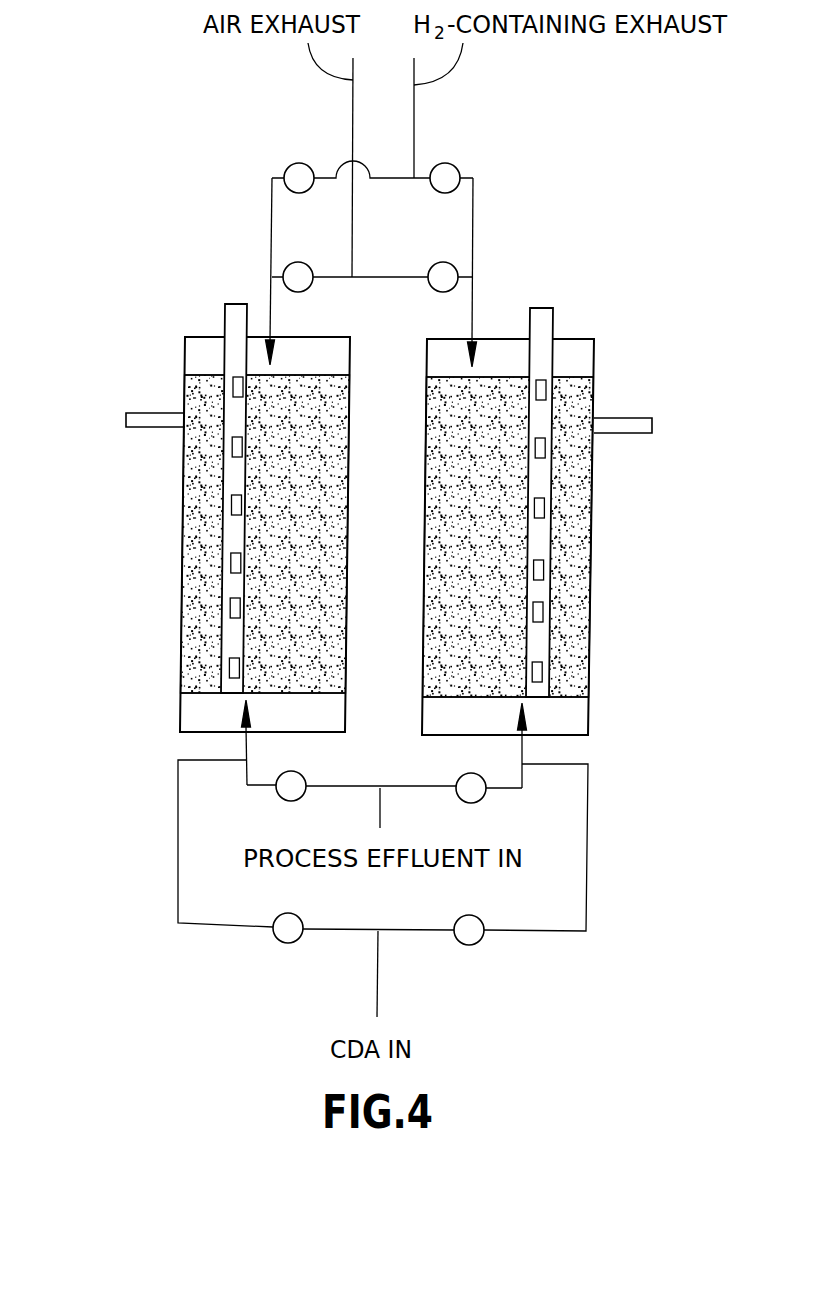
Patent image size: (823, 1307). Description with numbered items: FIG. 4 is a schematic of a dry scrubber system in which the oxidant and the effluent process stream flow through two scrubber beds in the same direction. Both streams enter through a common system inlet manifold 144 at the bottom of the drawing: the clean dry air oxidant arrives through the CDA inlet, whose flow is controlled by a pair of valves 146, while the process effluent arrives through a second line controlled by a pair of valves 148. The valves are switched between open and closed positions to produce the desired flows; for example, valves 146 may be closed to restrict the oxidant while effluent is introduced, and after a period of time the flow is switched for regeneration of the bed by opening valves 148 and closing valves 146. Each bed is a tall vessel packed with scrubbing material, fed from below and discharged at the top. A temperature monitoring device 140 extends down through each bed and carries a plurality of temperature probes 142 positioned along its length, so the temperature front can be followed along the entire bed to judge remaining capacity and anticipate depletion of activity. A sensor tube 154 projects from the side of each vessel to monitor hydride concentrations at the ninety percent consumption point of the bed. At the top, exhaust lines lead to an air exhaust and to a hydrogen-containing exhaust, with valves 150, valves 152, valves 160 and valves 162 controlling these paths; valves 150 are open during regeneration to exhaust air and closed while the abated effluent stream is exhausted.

The temperature monitoring device 140 is at (235, 304).
The temperature probes 142 is at (232, 607).
The system inlet manifold 144 is at (588, 810).
The valves 146 is at (283, 915).
The valves 148 is at (283, 773).
The valves 150 is at (453, 263).
The valves 152 is at (457, 168).
The sensor tube 154 is at (140, 413).
The valves 160 is at (292, 263).
The valves 162 is at (294, 164).